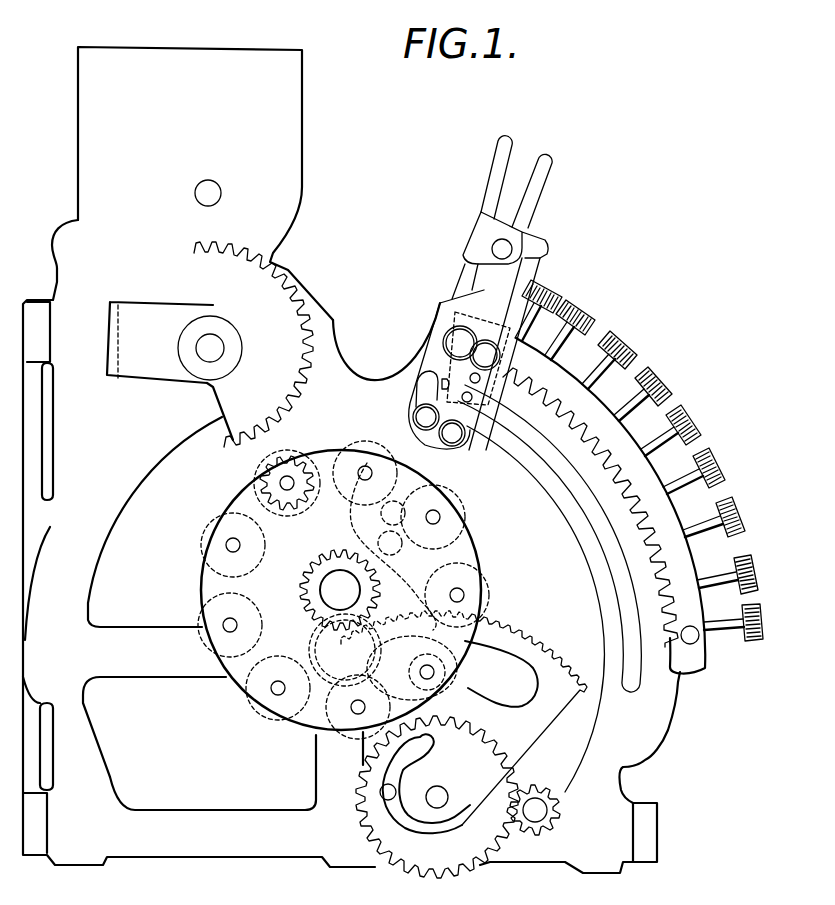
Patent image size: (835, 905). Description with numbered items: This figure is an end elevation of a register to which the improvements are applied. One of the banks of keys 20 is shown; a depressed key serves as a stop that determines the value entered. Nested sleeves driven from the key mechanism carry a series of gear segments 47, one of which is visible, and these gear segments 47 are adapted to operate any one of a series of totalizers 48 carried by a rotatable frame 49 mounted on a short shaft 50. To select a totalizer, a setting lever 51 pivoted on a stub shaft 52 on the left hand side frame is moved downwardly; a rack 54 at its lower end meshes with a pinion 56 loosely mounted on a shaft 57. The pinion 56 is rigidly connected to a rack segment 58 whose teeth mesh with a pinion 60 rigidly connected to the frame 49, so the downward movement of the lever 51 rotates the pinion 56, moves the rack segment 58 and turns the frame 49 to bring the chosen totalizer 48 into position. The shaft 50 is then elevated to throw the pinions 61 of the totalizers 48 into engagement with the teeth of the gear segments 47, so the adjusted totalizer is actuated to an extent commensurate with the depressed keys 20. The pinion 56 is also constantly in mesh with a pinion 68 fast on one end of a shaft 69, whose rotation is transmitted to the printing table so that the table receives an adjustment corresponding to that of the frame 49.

The keys 20 is at (697, 398).
The gear segment 47 is at (243, 262).
The totalizer 48 is at (275, 460).
The rotatable frame 49 is at (243, 500).
The short shaft 50 is at (330, 597).
The setting lever 51 is at (549, 176).
The stub shaft 52 is at (327, 663).
The rack 54 is at (437, 668).
The pinion 56 is at (383, 818).
The shaft 57 is at (437, 790).
The rack segment 58 is at (532, 732).
The pinion 60 is at (318, 576).
The pinion 61 is at (289, 462).
The pinion 68 is at (550, 812).
The shaft 69 is at (540, 815).